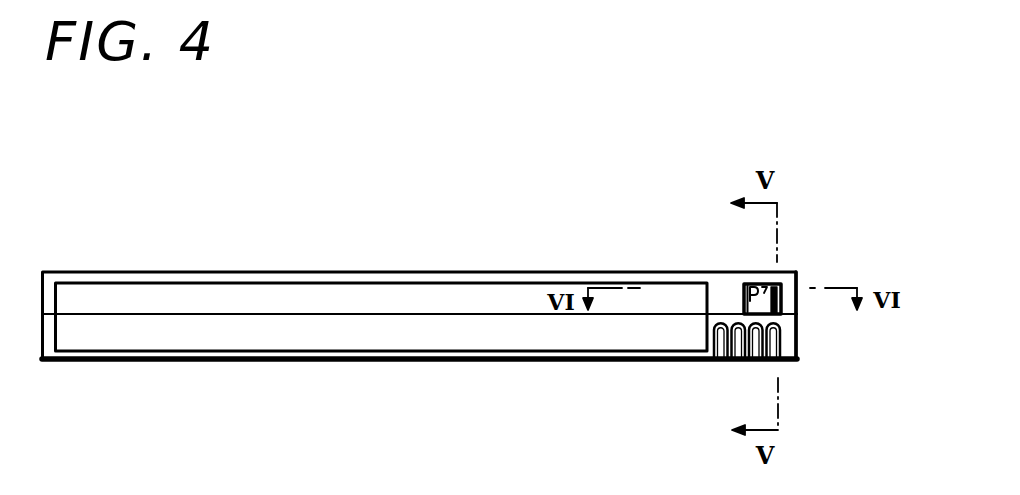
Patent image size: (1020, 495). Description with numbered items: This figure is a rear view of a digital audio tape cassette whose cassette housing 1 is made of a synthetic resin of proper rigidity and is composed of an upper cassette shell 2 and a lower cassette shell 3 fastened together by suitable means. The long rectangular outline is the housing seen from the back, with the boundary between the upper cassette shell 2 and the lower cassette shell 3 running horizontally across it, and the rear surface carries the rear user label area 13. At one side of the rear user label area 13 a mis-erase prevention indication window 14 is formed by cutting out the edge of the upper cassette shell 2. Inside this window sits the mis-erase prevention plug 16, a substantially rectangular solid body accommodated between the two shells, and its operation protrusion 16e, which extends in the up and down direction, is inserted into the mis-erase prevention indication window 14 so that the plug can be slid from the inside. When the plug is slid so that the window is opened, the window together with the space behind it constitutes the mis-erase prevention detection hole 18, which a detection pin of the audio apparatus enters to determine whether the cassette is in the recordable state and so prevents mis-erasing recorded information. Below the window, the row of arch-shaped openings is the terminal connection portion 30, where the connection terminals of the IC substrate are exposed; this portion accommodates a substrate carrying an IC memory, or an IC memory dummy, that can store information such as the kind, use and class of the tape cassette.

The cassette housing 1 is at (267, 214).
The upper cassette shell 2 is at (271, 277).
The lower cassette shell 3 is at (333, 284).
The rear user label area 13 is at (457, 285).
The mis-erase prevention indication window 14 is at (749, 283).
The mis-erase prevention plug 16 is at (772, 283).
The operation protrusion 16e is at (783, 312).
The mis-erase prevention detection hole 18 is at (806, 272).
The terminal connection portion 30 is at (740, 372).